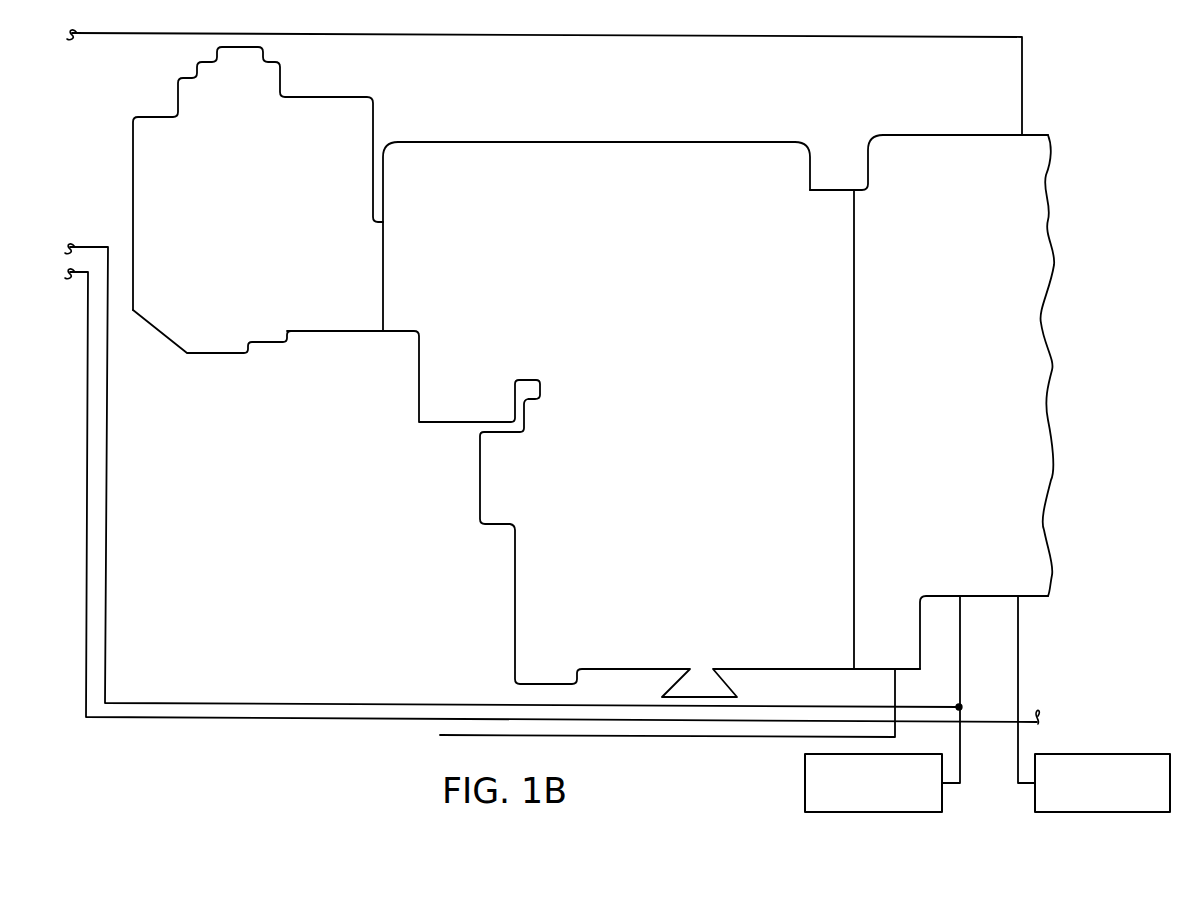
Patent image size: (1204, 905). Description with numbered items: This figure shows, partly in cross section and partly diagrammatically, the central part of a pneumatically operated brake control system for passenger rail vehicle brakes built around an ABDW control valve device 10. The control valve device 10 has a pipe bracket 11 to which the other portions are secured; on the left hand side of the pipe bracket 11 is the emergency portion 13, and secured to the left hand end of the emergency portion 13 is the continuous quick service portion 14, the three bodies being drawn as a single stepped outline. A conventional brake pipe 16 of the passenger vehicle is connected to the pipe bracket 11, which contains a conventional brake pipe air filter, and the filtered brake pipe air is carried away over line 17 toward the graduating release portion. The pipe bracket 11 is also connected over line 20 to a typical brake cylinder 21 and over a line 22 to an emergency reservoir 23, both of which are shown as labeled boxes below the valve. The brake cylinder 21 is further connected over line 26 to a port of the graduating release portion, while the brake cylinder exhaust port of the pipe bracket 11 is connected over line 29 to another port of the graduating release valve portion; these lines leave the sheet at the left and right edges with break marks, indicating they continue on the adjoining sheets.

The ABDW control valve device 10 is at (1091, 52).
The pipe bracket 11 is at (952, 134).
The emergency portion 13 is at (647, 143).
The continuous quick service portion 14 is at (338, 98).
The brake pipe 16 is at (672, 738).
The line 17 is at (1022, 80).
The line 20 is at (960, 668).
The brake cylinder 21 is at (805, 782).
The line 22 is at (1018, 668).
The emergency reservoir 23 is at (1063, 754).
The line 26 is at (310, 703).
The line 29 is at (342, 720).